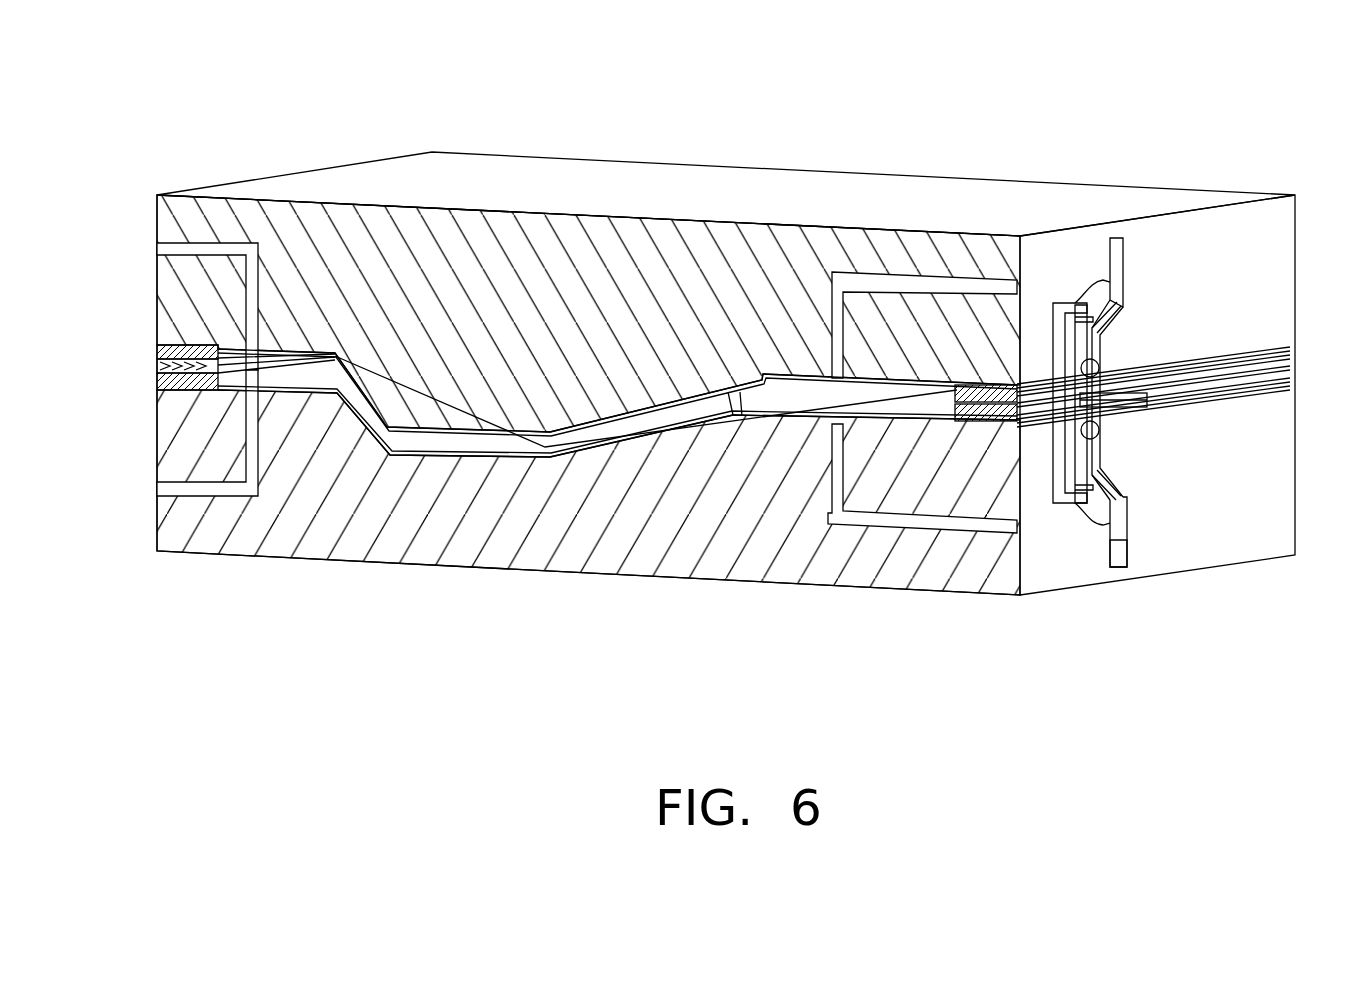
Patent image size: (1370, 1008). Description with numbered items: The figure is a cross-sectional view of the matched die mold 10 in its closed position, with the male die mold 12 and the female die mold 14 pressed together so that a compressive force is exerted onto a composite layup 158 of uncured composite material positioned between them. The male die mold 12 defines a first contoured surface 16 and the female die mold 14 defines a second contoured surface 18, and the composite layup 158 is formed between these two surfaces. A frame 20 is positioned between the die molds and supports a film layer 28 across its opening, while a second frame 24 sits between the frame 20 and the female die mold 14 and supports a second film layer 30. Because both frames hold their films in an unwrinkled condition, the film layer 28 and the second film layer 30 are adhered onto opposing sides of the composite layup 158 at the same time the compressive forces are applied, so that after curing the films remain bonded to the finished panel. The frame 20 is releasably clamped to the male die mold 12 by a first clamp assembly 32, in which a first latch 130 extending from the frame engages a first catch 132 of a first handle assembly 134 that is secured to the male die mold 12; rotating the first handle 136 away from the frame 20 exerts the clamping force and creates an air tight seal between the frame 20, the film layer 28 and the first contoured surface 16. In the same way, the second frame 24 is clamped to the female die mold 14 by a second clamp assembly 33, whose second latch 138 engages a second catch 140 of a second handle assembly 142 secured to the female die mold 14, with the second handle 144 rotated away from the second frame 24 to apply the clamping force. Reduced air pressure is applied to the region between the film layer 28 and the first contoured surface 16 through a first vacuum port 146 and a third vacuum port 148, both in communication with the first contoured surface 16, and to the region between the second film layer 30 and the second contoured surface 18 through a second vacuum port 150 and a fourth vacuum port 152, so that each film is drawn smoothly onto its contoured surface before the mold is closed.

The matched die mold 10 is at (828, 100).
The male die mold 12 is at (742, 195).
The female die mold 14 is at (565, 520).
The first contoured surface 16 is at (450, 370).
The second contoured surface 18 is at (418, 460).
The frame 20 is at (153, 347).
The second frame 24 is at (153, 386).
The film layer 28 is at (500, 430).
The second film layer 30 is at (535, 463).
The first clamp assembly 32 is at (1135, 272).
The second clamp assembly 33 is at (1130, 460).
The first latch 130 is at (1125, 378).
The first catch 132 is at (1120, 332).
The first handle assembly 134 is at (1060, 278).
The first handle 136 is at (1140, 245).
The second latch 138 is at (1147, 405).
The second catch 140 is at (1125, 440).
The second handle assembly 142 is at (1142, 525).
The second handle 144 is at (1125, 548).
The first vacuum port 146 is at (890, 280).
The third vacuum port 148 is at (205, 246).
The second vacuum port 150 is at (900, 530).
The fourth vacuum port 152 is at (220, 488).
The composite layup 158 is at (545, 440).